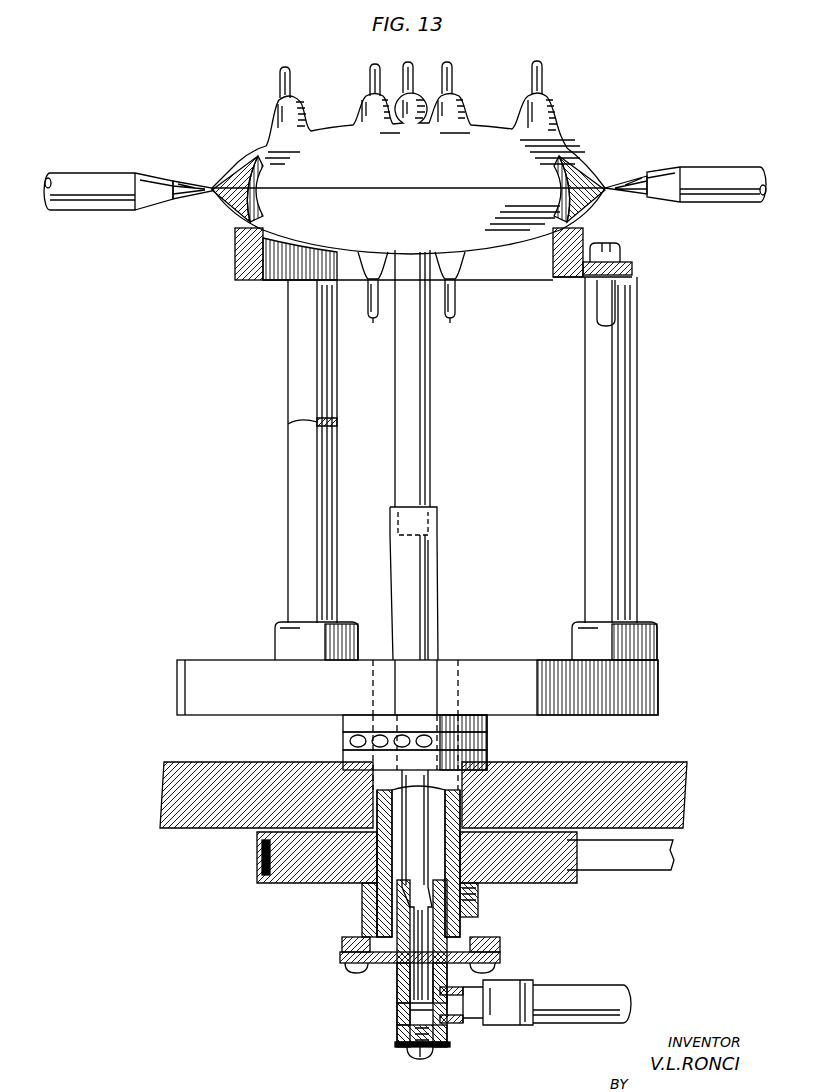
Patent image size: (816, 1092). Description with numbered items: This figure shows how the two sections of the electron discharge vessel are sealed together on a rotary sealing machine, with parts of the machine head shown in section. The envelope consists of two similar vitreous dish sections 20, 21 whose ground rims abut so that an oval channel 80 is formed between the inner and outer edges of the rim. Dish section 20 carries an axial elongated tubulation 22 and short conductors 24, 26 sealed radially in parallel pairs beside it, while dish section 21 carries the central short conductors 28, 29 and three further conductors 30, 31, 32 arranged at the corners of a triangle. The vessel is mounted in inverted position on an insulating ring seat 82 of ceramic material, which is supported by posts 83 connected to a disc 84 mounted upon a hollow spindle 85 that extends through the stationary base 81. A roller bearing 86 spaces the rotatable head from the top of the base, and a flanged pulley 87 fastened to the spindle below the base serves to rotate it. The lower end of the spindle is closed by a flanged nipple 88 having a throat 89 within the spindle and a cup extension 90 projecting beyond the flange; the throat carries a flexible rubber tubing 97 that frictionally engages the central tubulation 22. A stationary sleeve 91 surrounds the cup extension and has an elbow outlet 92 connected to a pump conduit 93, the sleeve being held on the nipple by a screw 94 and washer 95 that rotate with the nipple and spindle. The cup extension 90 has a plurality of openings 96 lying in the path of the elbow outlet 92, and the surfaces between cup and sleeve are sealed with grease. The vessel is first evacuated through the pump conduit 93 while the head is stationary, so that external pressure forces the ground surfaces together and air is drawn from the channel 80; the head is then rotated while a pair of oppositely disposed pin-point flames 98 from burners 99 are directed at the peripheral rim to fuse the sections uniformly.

The dish section 20 is at (587, 202).
The dish section 21 is at (573, 163).
The axial elongated tubulation 22 is at (415, 410).
The short conductor 24 is at (372, 315).
The short conductor 26 is at (453, 315).
The short conductor 28 is at (372, 72).
The short conductor 29 is at (452, 70).
The short conductor 30 is at (283, 73).
The short conductor 31 is at (542, 72).
The short conductor 32 is at (408, 72).
The oval channel 80 is at (228, 188).
The stationary base 81 is at (672, 798).
The insulating ring seat 82 is at (243, 255).
The post 83 is at (297, 339).
The disc 84 is at (193, 686).
The hollow spindle 85 is at (457, 880).
The roller bearing 86 is at (483, 743).
The flanged pulley 87 is at (297, 873).
The flanged nipple 88 is at (340, 958).
The throat 89 is at (396, 923).
The cup extension 90 is at (402, 999).
The stationary sleeve 91 is at (397, 981).
The elbow outlet 92 is at (473, 990).
The pump conduit 93 is at (607, 987).
The screw 94 is at (420, 1054).
The washer 95 is at (447, 1044).
The openings 96 is at (403, 1026).
The flexible tubing 97 is at (417, 586).
The pin-point flames 98 is at (182, 187).
The burners 99 is at (107, 182).